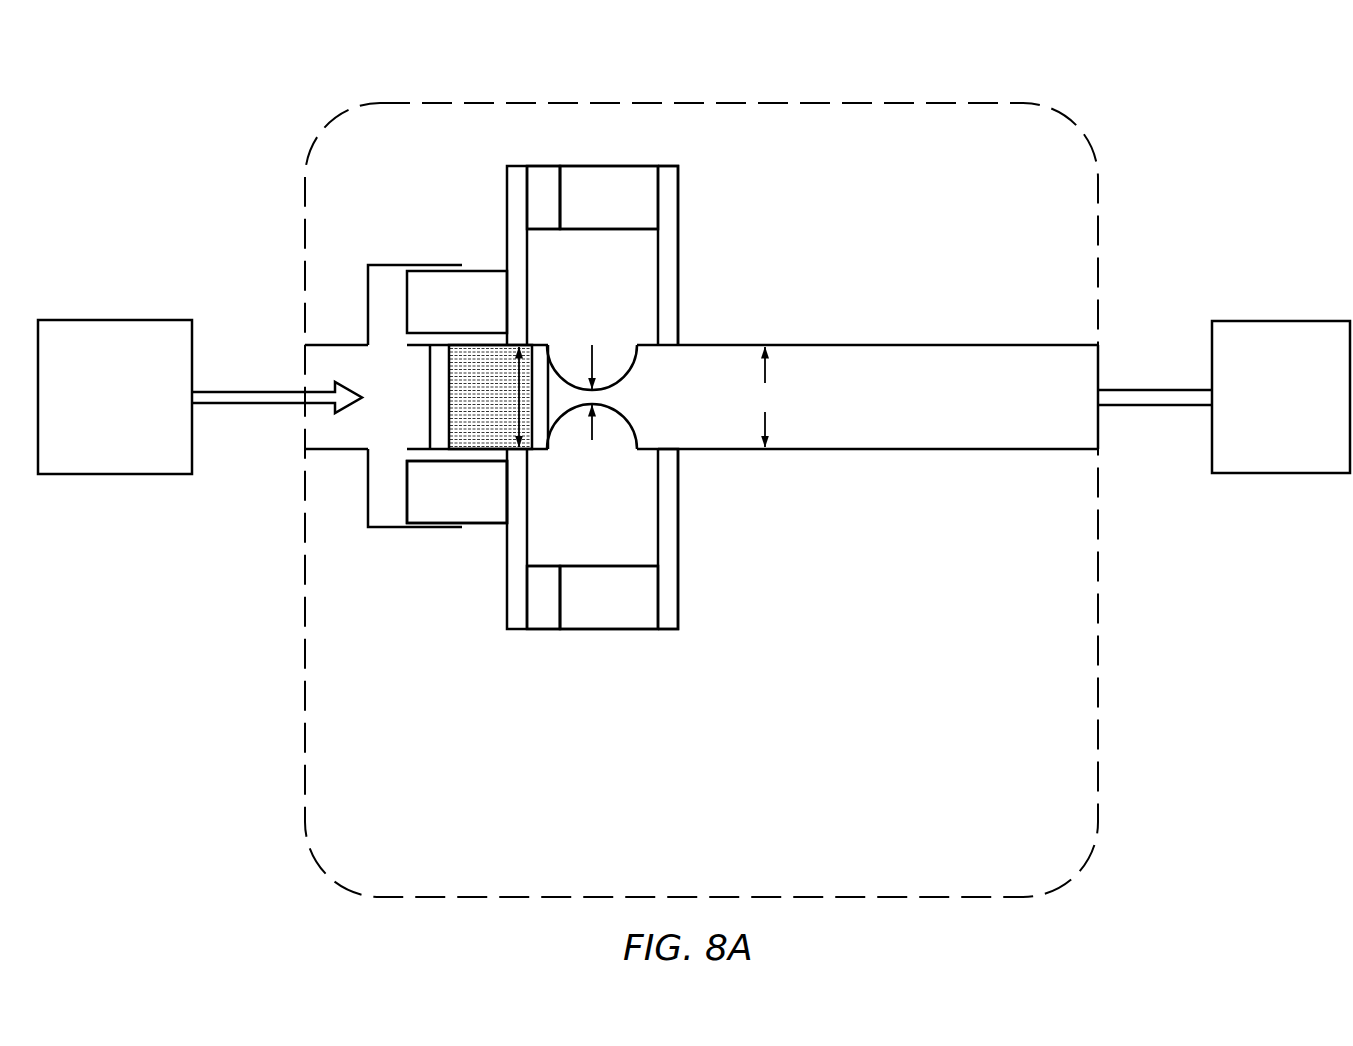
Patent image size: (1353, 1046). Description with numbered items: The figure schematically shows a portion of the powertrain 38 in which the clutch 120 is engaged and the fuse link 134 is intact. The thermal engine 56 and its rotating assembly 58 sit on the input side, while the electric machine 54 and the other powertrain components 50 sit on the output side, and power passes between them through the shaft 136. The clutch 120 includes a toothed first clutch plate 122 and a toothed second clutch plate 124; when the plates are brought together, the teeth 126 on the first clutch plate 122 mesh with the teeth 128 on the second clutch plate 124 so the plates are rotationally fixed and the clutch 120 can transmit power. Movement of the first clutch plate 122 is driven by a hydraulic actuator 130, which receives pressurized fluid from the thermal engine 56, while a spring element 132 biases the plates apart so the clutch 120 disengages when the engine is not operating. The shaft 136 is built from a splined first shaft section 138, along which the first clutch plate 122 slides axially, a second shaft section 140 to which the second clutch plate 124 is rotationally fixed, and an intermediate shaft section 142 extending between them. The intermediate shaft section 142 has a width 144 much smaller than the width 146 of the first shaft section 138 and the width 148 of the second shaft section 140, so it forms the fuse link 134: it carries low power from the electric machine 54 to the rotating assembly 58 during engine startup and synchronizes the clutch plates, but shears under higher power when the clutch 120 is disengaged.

The powertrain 38 is at (1150, 118).
The powertrain components 50 is at (1224, 397).
The electric machine 54 is at (1253, 413).
The thermal engine 56 is at (115, 397).
The rotating assembly 58 is at (89, 412).
The clutch 120 is at (701, 418).
The first clutch plate 122 is at (510, 150).
The second clutch plate 124 is at (677, 150).
The teeth 126 is at (542, 165).
The teeth 128 is at (635, 165).
The actuator 130 is at (383, 252).
The spring element 132 is at (476, 527).
The fuse link 134 is at (671, 427).
The shaft 136 is at (867, 342).
The first shaft section 138 is at (485, 383).
The second shaft section 140 is at (905, 341).
The intermediate shaft section 142 is at (629, 402).
The width 144 is at (593, 352).
The width 146 is at (531, 398).
The width 148 is at (765, 397).